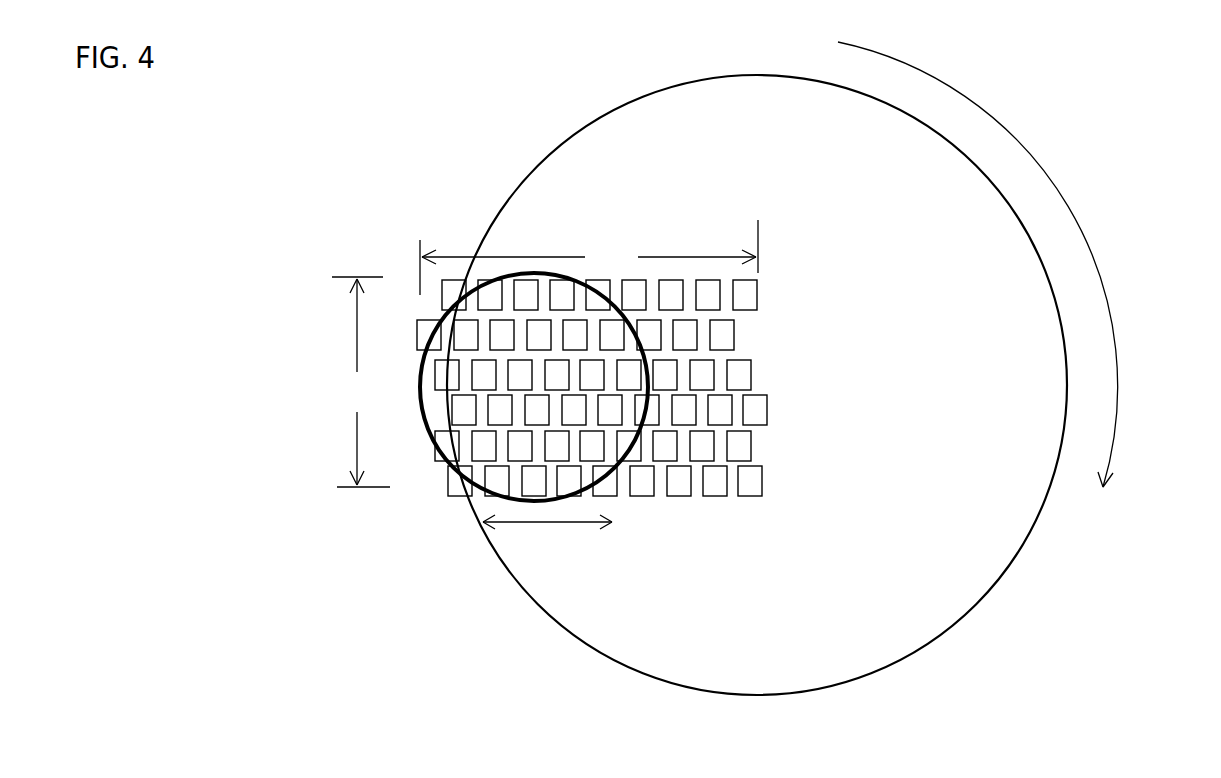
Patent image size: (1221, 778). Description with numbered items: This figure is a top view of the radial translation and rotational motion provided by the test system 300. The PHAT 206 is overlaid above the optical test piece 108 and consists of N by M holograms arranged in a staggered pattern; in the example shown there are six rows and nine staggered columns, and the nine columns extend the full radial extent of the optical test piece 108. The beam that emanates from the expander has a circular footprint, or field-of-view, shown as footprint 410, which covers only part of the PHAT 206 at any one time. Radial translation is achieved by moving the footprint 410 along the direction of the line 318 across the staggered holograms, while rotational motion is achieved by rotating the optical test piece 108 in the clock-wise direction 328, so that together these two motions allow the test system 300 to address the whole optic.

The optical test piece 108 is at (977, 597).
The test system 300 is at (540, 70).
The PHAT 206 is at (743, 332).
The footprint 410 is at (495, 275).
The line 318 is at (550, 557).
The clock-wise direction 328 is at (1085, 250).